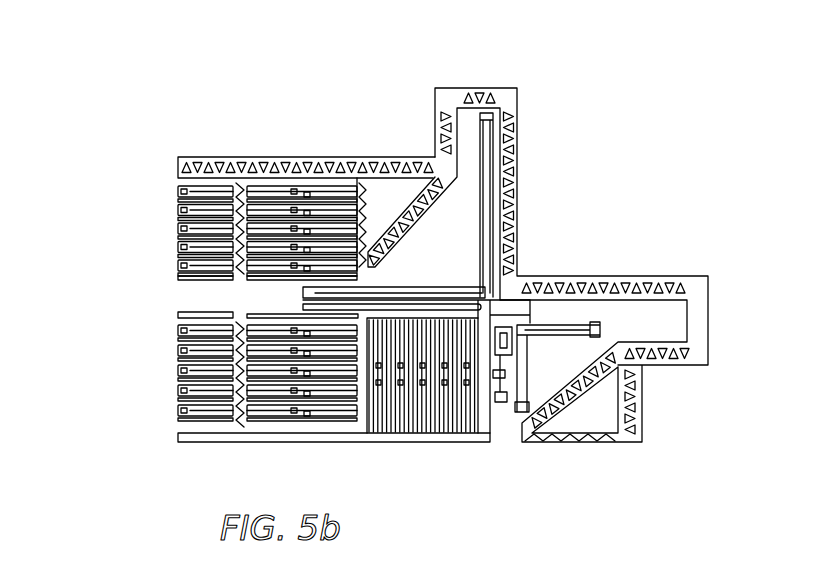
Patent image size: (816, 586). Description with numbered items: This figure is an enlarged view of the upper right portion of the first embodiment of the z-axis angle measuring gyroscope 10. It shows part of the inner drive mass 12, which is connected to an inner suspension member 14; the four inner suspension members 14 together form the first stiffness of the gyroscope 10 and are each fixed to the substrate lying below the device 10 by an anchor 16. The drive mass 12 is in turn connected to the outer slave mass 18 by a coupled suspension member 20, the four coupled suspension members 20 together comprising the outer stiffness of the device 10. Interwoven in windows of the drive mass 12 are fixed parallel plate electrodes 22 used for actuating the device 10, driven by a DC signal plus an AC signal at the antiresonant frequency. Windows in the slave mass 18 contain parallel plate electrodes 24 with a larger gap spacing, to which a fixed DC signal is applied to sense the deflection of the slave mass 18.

The angle measuring gyroscope 10 is at (159, 127).
The inner drive mass 12 is at (234, 317).
The inner suspension member 14 is at (552, 332).
The anchor 16 is at (496, 352).
The outer slave mass 18 is at (519, 90).
The coupled suspension member 20 is at (422, 297).
The fixed parallel plate electrode 22 is at (178, 380).
The parallel plate electrode 24 is at (178, 233).